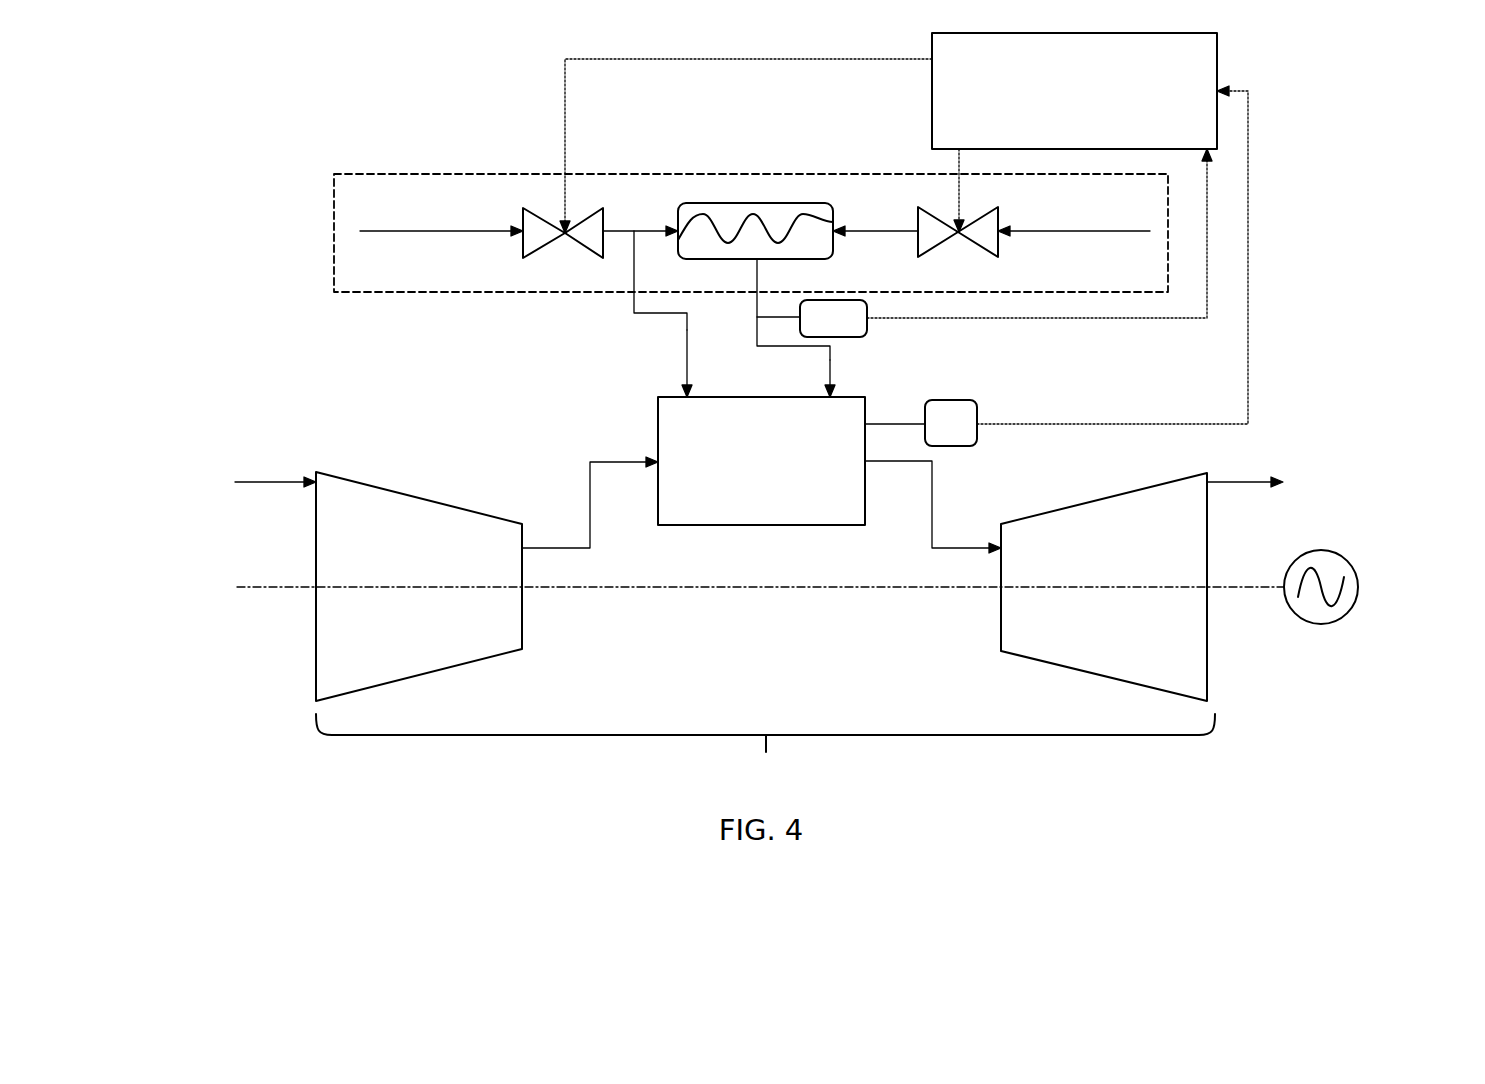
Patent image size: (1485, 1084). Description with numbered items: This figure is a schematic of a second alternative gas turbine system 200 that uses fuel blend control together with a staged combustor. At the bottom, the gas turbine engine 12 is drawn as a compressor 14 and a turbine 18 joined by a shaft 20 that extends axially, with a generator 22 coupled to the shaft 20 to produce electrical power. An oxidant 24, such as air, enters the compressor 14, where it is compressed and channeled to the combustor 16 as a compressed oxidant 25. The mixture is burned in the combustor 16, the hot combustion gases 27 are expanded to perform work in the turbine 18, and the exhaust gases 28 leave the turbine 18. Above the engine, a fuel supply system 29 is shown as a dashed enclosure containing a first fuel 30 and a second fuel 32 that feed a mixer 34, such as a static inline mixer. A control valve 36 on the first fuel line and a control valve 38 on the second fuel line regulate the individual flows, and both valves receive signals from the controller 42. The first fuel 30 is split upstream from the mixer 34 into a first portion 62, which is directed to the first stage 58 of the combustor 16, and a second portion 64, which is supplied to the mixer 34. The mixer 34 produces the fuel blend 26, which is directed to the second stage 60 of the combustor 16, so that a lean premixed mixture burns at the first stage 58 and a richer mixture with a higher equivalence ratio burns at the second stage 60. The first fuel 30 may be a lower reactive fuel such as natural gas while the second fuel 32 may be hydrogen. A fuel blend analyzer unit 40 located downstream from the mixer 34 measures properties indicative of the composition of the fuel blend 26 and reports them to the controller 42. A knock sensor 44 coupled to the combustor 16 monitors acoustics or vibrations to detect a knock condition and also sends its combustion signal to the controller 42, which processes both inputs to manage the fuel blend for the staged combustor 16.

The gas turbine system 200 is at (203, 230).
The fuel supply system 29 is at (322, 262).
The first fuel 30 is at (440, 251).
The control valve 36 is at (563, 243).
The second portion 64 is at (640, 217).
The mixer 34 is at (755, 216).
The control valve 38 is at (915, 242).
The second fuel 32 is at (1074, 247).
The controller 42 is at (888, 133).
The first portion 62 is at (640, 280).
The first stage 58 is at (668, 363).
The fuel blend 26 is at (772, 309).
The second stage 60 is at (850, 374).
The fuel blend analyzer unit 40 is at (984, 243).
The combustor 16 is at (761, 461).
The knock sensor 44 is at (1056, 266).
The compressed oxidant 25 is at (590, 502).
The hot combustion gases 27 is at (933, 505).
The compressor 14 is at (419, 586).
The turbine 18 is at (1104, 587).
The oxidant 24 is at (258, 482).
The exhaust gases 28 is at (1265, 485).
The shaft 20 is at (760, 607).
The generator 22 is at (1356, 582).
The gas turbine engine 12 is at (765, 755).